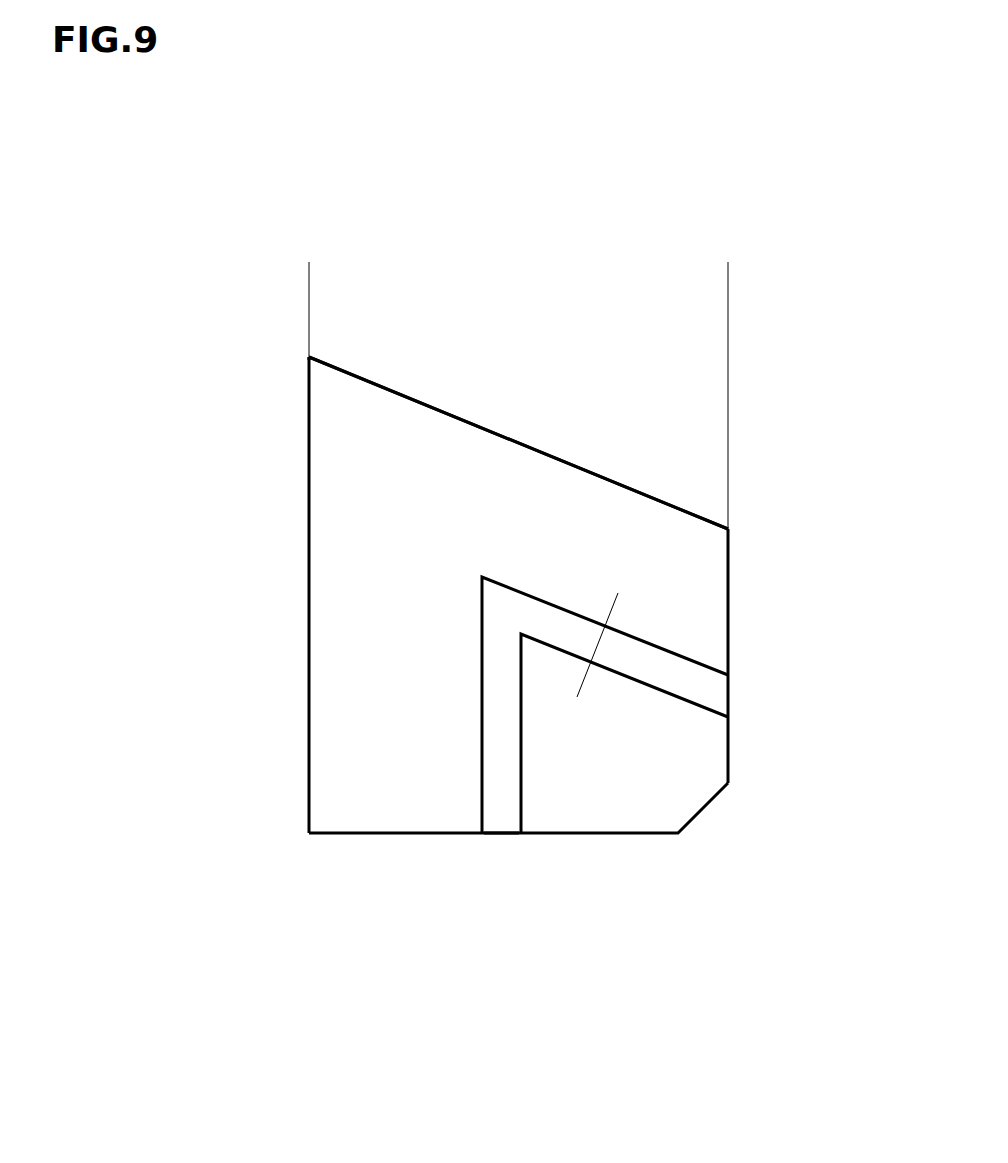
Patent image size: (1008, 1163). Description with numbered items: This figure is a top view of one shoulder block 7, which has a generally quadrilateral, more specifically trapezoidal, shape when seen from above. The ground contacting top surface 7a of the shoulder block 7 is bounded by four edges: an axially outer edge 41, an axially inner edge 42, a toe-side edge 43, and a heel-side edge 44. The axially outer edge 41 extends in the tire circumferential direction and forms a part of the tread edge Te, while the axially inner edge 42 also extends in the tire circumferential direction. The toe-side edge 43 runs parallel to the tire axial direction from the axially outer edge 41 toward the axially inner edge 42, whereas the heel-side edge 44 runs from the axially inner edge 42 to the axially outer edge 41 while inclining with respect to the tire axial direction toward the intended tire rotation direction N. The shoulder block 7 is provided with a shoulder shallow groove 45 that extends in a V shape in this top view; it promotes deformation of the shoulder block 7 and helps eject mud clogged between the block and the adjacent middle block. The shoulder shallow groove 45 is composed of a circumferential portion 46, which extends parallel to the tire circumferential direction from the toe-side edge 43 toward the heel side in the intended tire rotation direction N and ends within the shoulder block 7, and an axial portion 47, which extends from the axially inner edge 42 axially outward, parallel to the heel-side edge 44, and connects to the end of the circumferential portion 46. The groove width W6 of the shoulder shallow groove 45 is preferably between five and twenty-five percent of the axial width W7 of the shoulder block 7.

The shoulder block 7 is at (522, 602).
The ground contacting top surface 7a is at (546, 519).
The axially outer edge 41 is at (309, 609).
The axially inner edge 42 is at (730, 608).
The toe-side edge 43 is at (627, 835).
The heel-side edge 44 is at (416, 402).
The shoulder shallow groove 45 is at (500, 841).
The circumferential portion 46 is at (500, 746).
The axial portion 47 is at (661, 675).
The tread edge Te is at (309, 427).
The intended tire rotation direction N is at (100, 635).
The groove width W6 is at (578, 676).
The axial width W7 is at (728, 262).